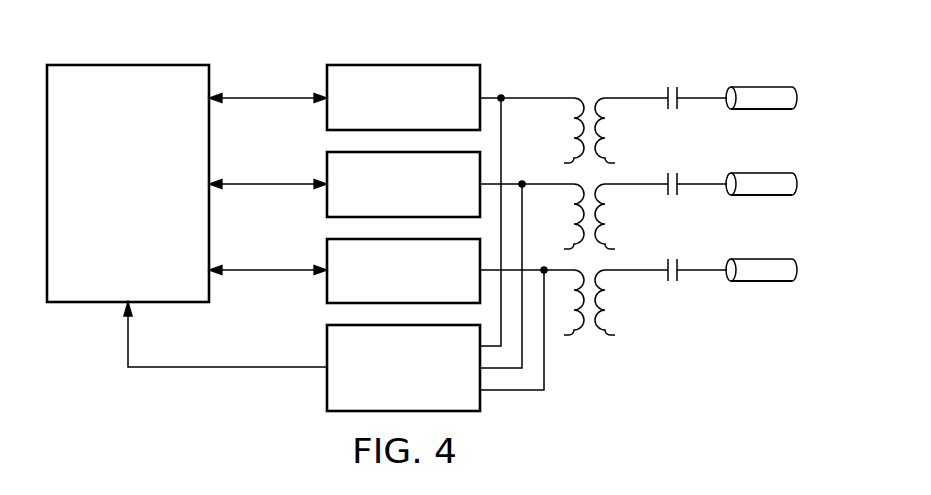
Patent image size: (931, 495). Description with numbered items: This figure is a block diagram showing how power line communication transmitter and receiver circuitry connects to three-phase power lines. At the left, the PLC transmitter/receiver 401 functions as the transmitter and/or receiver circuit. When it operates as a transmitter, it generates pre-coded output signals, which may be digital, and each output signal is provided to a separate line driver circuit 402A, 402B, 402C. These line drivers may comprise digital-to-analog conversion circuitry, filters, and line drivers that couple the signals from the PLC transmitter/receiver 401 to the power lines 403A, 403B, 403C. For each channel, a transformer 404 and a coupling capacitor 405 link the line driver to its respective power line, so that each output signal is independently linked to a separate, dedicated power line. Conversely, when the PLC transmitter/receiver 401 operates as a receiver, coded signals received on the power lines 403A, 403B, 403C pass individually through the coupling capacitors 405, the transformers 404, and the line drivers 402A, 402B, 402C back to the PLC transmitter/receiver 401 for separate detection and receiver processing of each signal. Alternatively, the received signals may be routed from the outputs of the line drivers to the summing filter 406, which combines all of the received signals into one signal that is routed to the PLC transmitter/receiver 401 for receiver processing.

The PLC transmitter/receiver 401 is at (148, 247).
The line driver circuit 402A is at (327, 82).
The line driver circuit 402B is at (327, 170).
The line driver circuit 402C is at (327, 285).
The power line 403A is at (762, 87).
The power line 403B is at (762, 173).
The power line 403C is at (762, 283).
The transformer 404 is at (589, 90).
The coupling capacitor 405 is at (674, 83).
The summing filter 406 is at (327, 378).